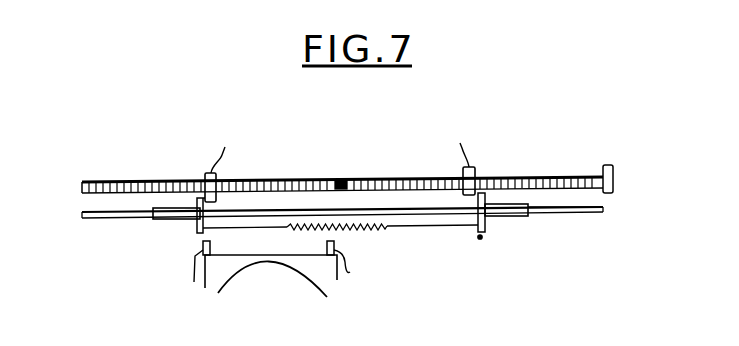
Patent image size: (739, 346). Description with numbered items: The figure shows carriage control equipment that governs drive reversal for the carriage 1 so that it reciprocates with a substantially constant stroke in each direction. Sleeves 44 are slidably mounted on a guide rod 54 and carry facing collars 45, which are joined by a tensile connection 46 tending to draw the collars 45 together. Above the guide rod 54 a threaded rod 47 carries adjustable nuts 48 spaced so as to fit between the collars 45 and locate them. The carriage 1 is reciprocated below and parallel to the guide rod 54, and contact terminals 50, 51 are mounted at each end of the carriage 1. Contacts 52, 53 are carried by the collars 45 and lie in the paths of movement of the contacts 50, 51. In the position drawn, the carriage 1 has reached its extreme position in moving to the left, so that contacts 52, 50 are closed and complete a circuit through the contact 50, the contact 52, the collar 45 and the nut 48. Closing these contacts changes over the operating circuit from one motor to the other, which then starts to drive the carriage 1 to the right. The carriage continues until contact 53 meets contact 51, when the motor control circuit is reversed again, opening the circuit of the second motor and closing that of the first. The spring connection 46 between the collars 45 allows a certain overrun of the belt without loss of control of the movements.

The carriage 1 is at (338, 279).
The sleeves 44 is at (155, 218).
The collars 45 is at (200, 217).
The tensile connection 46 is at (356, 232).
The threaded rod 47 is at (365, 178).
The adjustable nuts 48 is at (208, 180).
The contact terminal 50 is at (211, 250).
The contact terminal 51 is at (326, 250).
The contact 52 is at (201, 236).
The contact 53 is at (482, 239).
The guide rod 54 is at (575, 213).